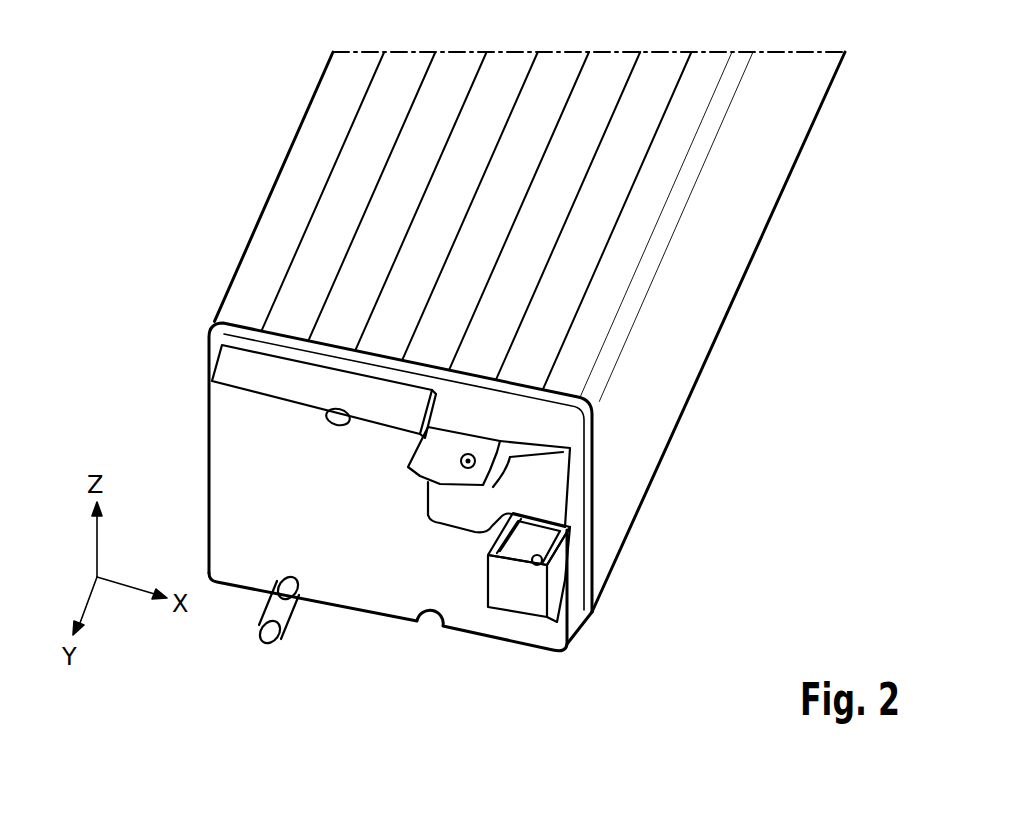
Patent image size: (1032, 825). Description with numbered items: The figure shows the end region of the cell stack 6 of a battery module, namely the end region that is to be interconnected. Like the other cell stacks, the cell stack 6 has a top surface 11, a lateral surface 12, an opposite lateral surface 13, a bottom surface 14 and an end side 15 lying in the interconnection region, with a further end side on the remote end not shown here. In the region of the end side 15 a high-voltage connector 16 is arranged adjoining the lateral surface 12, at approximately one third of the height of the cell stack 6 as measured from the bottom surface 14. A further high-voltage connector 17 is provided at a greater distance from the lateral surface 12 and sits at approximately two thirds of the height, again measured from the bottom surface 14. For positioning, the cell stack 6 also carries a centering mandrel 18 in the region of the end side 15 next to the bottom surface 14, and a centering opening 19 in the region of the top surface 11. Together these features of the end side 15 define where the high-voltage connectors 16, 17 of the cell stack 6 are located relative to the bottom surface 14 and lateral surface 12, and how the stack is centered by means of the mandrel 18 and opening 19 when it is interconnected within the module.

The cell stack 6 is at (258, 166).
The top surface 11 is at (647, 193).
The lateral surface 12 is at (693, 277).
The lateral surface 13 is at (248, 240).
The bottom surface 14 is at (746, 273).
The end side 15 is at (400, 572).
The high-voltage connector 16 is at (558, 542).
The further high-voltage connector 17 is at (446, 459).
The centering mandrel 18 is at (290, 620).
The centering opening 19 is at (326, 416).